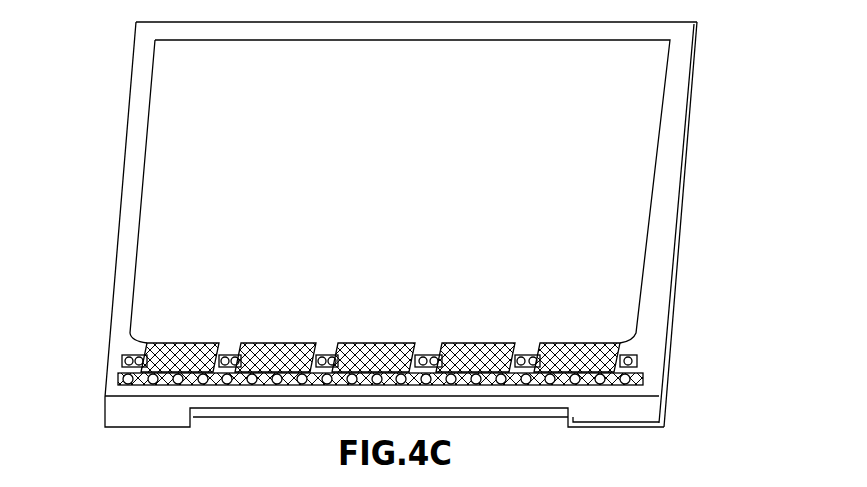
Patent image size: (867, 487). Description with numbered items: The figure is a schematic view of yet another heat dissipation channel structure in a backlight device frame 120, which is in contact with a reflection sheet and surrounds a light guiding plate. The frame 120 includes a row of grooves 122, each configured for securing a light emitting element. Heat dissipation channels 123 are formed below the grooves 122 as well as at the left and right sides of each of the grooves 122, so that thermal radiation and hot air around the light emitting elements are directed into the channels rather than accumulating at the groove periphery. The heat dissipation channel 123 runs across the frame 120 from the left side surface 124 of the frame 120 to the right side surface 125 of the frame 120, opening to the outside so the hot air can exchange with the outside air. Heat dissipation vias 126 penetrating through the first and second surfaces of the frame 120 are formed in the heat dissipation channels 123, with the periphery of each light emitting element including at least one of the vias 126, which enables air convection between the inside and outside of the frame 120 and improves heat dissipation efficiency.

The frame 120 is at (130, 121).
The groove 122 is at (198, 343).
The heat dissipation channel 123 is at (638, 358).
The left side surface 124 is at (113, 277).
The right side surface 125 is at (673, 288).
The heat dissipation via 126 is at (122, 357).